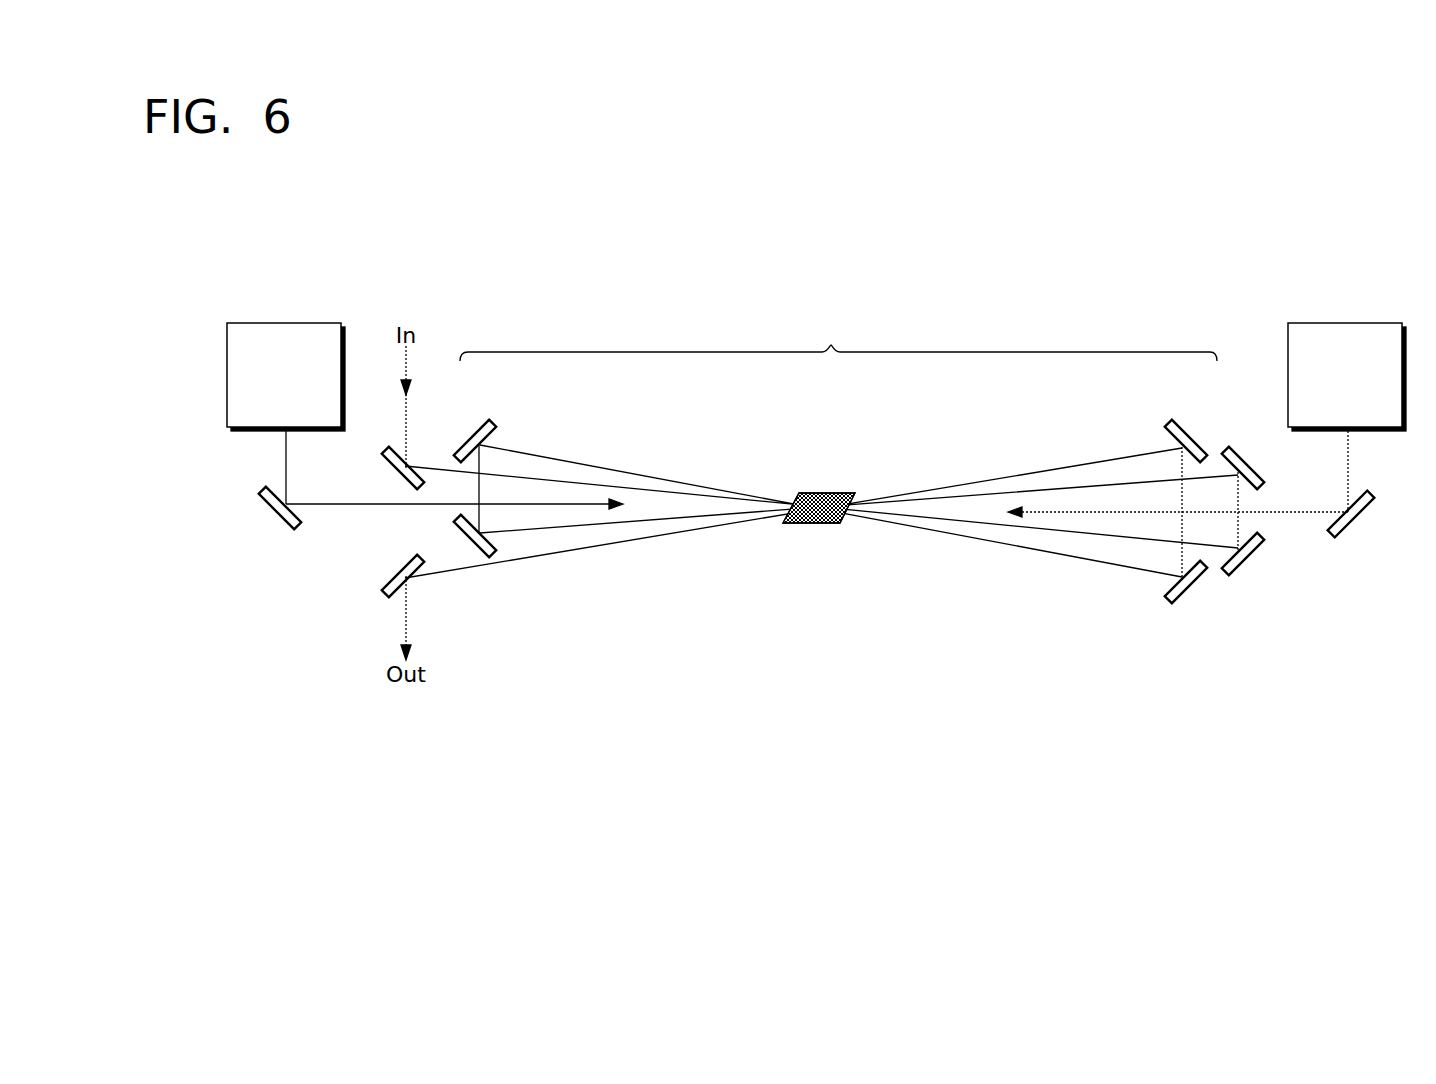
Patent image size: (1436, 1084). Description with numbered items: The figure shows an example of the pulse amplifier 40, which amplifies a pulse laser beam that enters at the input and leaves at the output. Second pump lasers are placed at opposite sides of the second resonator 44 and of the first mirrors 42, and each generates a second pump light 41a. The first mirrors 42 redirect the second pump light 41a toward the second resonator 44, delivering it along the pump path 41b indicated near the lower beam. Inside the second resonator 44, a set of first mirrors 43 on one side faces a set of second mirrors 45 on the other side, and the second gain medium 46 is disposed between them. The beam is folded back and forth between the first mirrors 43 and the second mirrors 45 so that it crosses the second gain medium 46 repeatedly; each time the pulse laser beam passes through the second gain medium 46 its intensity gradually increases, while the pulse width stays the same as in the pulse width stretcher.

The pulse amplifier 40 is at (1256, 268).
The second pump light 41a is at (286, 453).
The pump beam 41b is at (333, 505).
The first mirror 42 is at (274, 510).
The first mirror 43 is at (468, 422).
The second resonator 44 is at (838, 340).
The second mirror 45 is at (1192, 423).
The second gain medium 46 is at (830, 493).